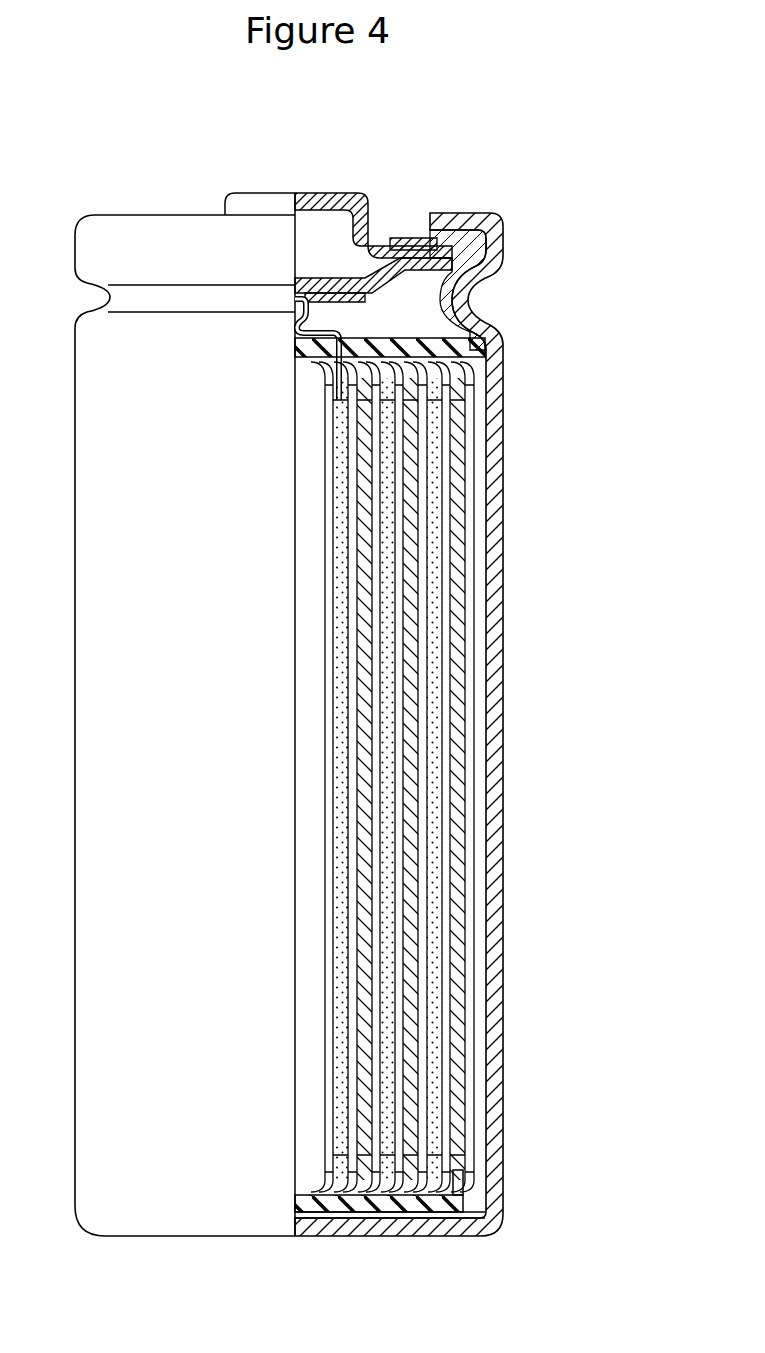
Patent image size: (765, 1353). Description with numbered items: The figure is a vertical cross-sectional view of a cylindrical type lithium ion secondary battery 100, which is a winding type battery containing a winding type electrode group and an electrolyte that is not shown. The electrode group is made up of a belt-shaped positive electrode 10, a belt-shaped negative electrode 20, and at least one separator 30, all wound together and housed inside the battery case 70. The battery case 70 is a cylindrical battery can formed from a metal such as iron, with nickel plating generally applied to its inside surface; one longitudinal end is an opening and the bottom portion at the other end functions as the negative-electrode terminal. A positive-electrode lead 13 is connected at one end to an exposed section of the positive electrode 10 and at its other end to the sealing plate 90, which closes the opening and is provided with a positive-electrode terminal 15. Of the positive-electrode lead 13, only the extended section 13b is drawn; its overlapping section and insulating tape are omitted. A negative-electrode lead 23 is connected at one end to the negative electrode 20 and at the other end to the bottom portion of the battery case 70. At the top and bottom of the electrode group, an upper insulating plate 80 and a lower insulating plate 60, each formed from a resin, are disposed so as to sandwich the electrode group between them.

The lithium ion secondary battery 100 is at (272, 104).
The positive-electrode terminal 15 is at (333, 193).
The sealing plate 90 is at (468, 214).
The positive-electrode lead 13 is at (458, 337).
The extended section 13b is at (307, 322).
The upper insulating plate 80 is at (490, 345).
The positive electrode 10 is at (440, 765).
The negative electrode 20 is at (457, 523).
The separator 30 is at (430, 650).
The battery case 70 is at (493, 895).
The lower insulating plate 60 is at (358, 1205).
The negative-electrode lead 23 is at (413, 1213).